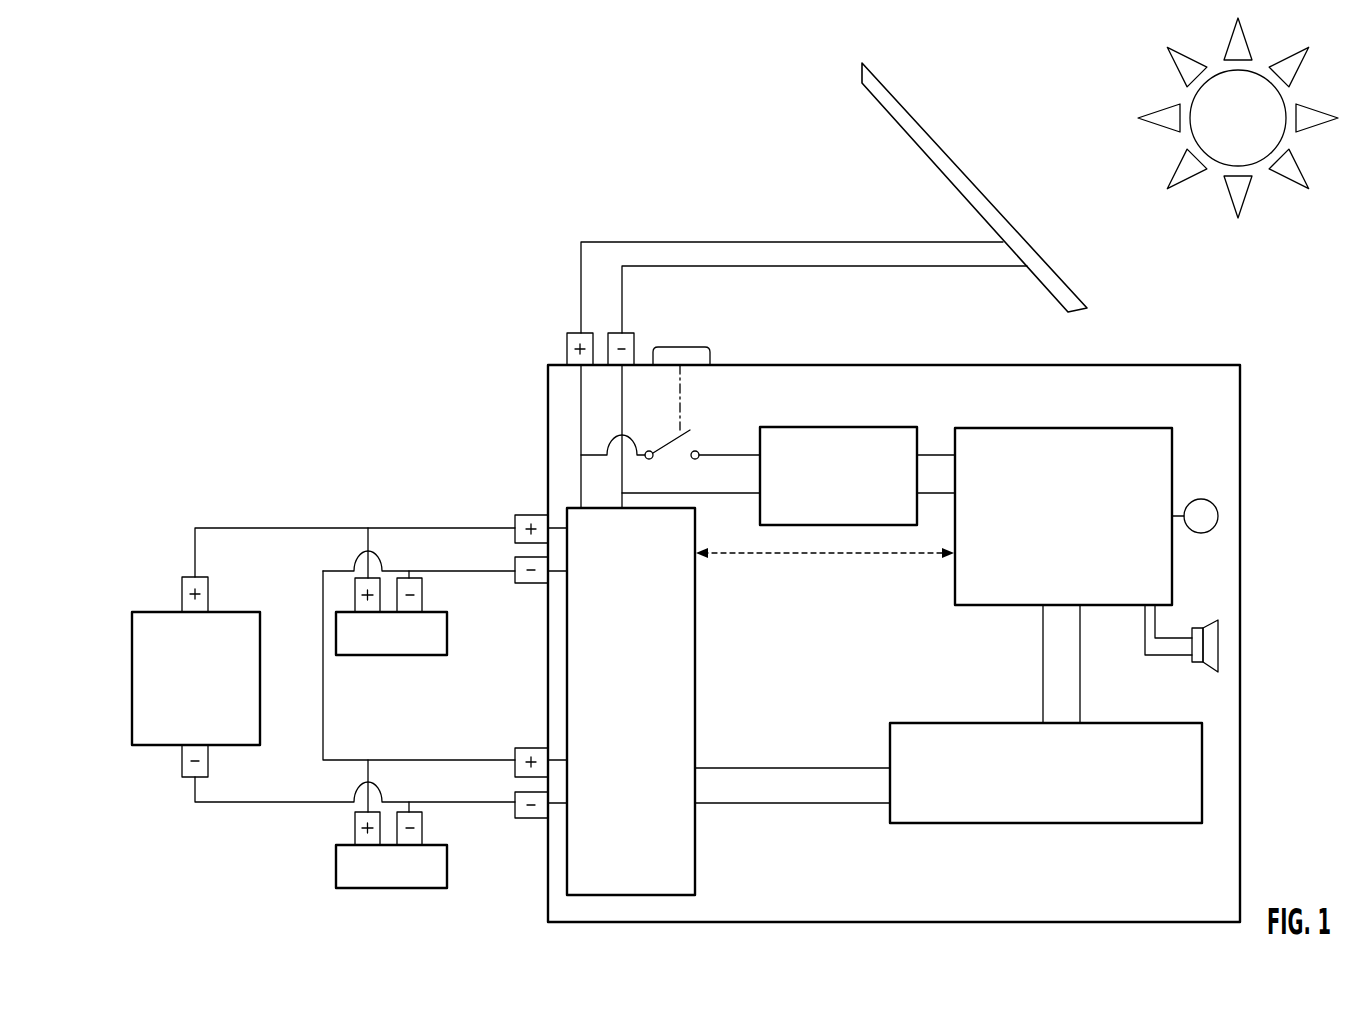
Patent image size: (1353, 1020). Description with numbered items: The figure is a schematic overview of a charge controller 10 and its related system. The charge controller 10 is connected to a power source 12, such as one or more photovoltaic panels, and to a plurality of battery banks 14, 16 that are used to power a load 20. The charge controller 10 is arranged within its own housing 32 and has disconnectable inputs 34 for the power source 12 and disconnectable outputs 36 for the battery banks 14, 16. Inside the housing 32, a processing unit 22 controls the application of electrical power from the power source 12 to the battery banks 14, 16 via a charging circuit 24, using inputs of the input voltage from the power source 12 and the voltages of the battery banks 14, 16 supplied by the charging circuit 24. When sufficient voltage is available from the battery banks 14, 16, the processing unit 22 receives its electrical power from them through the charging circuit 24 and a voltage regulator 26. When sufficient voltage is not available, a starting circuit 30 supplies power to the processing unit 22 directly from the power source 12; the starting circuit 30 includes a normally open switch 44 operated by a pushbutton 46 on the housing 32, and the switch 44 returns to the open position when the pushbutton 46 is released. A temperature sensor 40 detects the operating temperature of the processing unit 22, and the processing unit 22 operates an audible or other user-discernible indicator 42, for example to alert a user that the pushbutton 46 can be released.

The charge controller 10 is at (1233, 303).
The power source 12 is at (960, 168).
The battery bank 14 is at (447, 643).
The battery bank 16 is at (447, 870).
The load 20 is at (147, 737).
The processing unit 22 is at (1174, 462).
The charging circuit 24 is at (695, 673).
The voltage regulator 26 is at (1088, 823).
The starting circuit 30 is at (853, 427).
The housing 32 is at (1240, 723).
The disconnectable inputs 34 is at (542, 320).
The disconnectable outputs 36 is at (519, 484).
The temperature sensor 40 is at (1218, 510).
The indicator 42 is at (1213, 636).
The normally open switch 44 is at (688, 430).
The pushbutton 46 is at (697, 358).